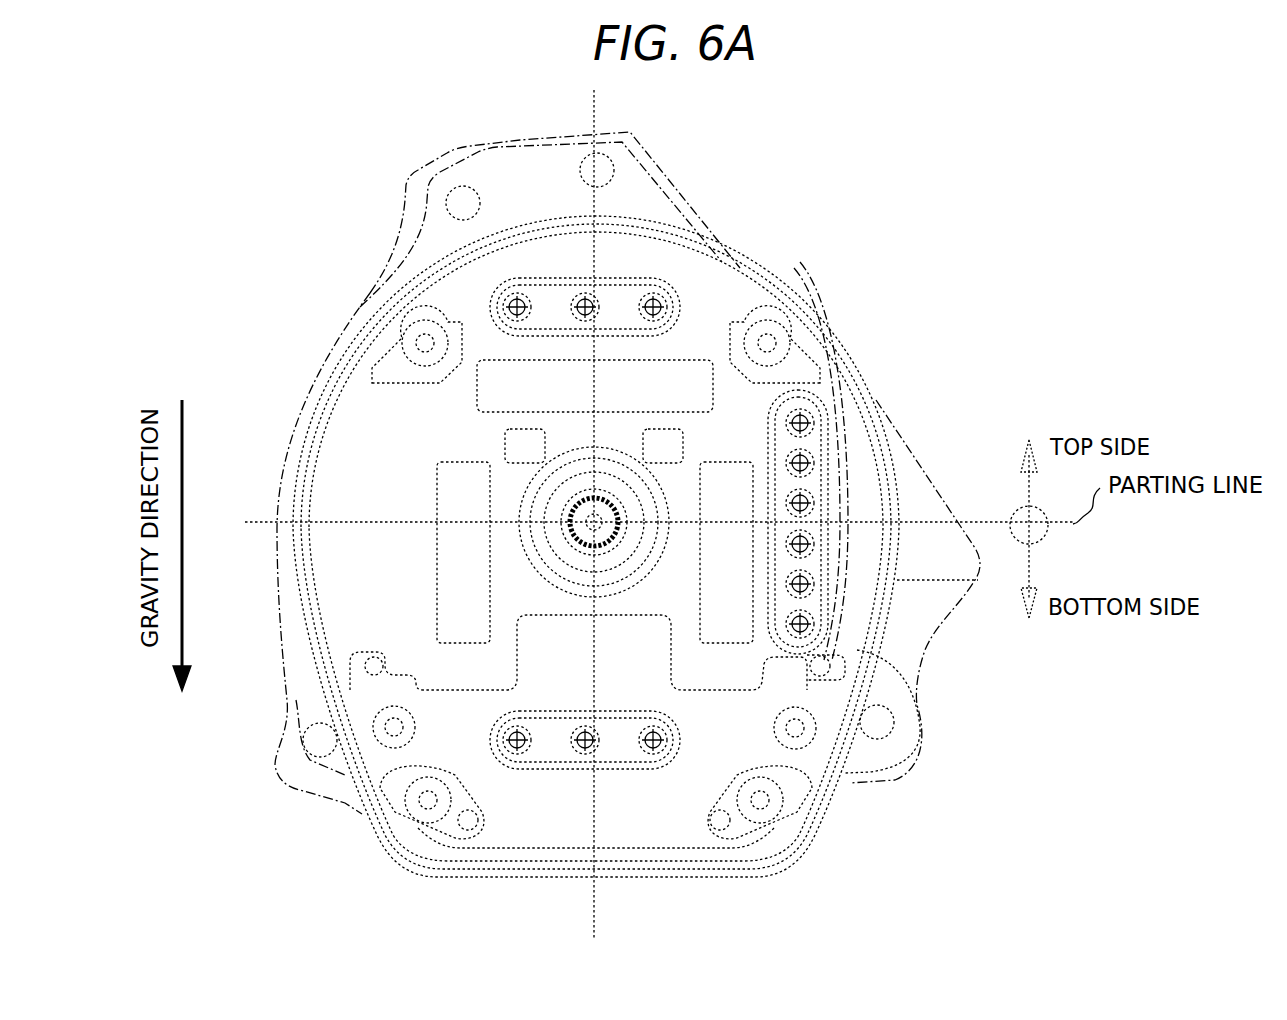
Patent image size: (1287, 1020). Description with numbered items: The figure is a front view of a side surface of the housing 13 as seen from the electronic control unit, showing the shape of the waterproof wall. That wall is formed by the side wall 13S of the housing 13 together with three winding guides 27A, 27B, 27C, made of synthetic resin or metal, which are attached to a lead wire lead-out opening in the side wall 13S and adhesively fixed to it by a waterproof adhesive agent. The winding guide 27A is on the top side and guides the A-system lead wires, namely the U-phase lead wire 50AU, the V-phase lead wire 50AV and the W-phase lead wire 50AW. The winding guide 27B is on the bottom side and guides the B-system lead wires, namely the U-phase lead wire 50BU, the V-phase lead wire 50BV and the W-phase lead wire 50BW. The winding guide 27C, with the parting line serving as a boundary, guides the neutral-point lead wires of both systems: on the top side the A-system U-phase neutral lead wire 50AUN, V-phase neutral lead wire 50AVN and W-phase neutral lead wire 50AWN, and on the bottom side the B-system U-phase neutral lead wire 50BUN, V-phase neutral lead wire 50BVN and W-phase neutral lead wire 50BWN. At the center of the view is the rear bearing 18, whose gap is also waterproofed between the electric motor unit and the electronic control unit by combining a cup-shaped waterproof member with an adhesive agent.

The housing 13 is at (303, 393).
The side wall 13S is at (387, 577).
The rear bearing 18 is at (545, 507).
The winding guide 27A is at (563, 310).
The winding guide 27B is at (603, 747).
The winding guide 27C is at (777, 597).
The U-phase lead wire 50AU is at (582, 303).
The V-phase lead wire 50AV is at (655, 308).
The W-phase lead wire 50AW is at (517, 307).
The U-phase neutral lead wire 50AUN is at (805, 460).
The V-phase neutral lead wire 50AVN is at (806, 500).
The W-phase neutral lead wire 50AWN is at (805, 420).
The U-phase lead wire 50BU is at (585, 742).
The V-phase lead wire 50BV is at (517, 742).
The W-phase lead wire 50BW is at (655, 745).
The U-phase neutral lead wire 50BUN is at (810, 592).
The V-phase neutral lead wire 50BVN is at (803, 632).
The W-phase neutral lead wire 50BWN is at (810, 550).